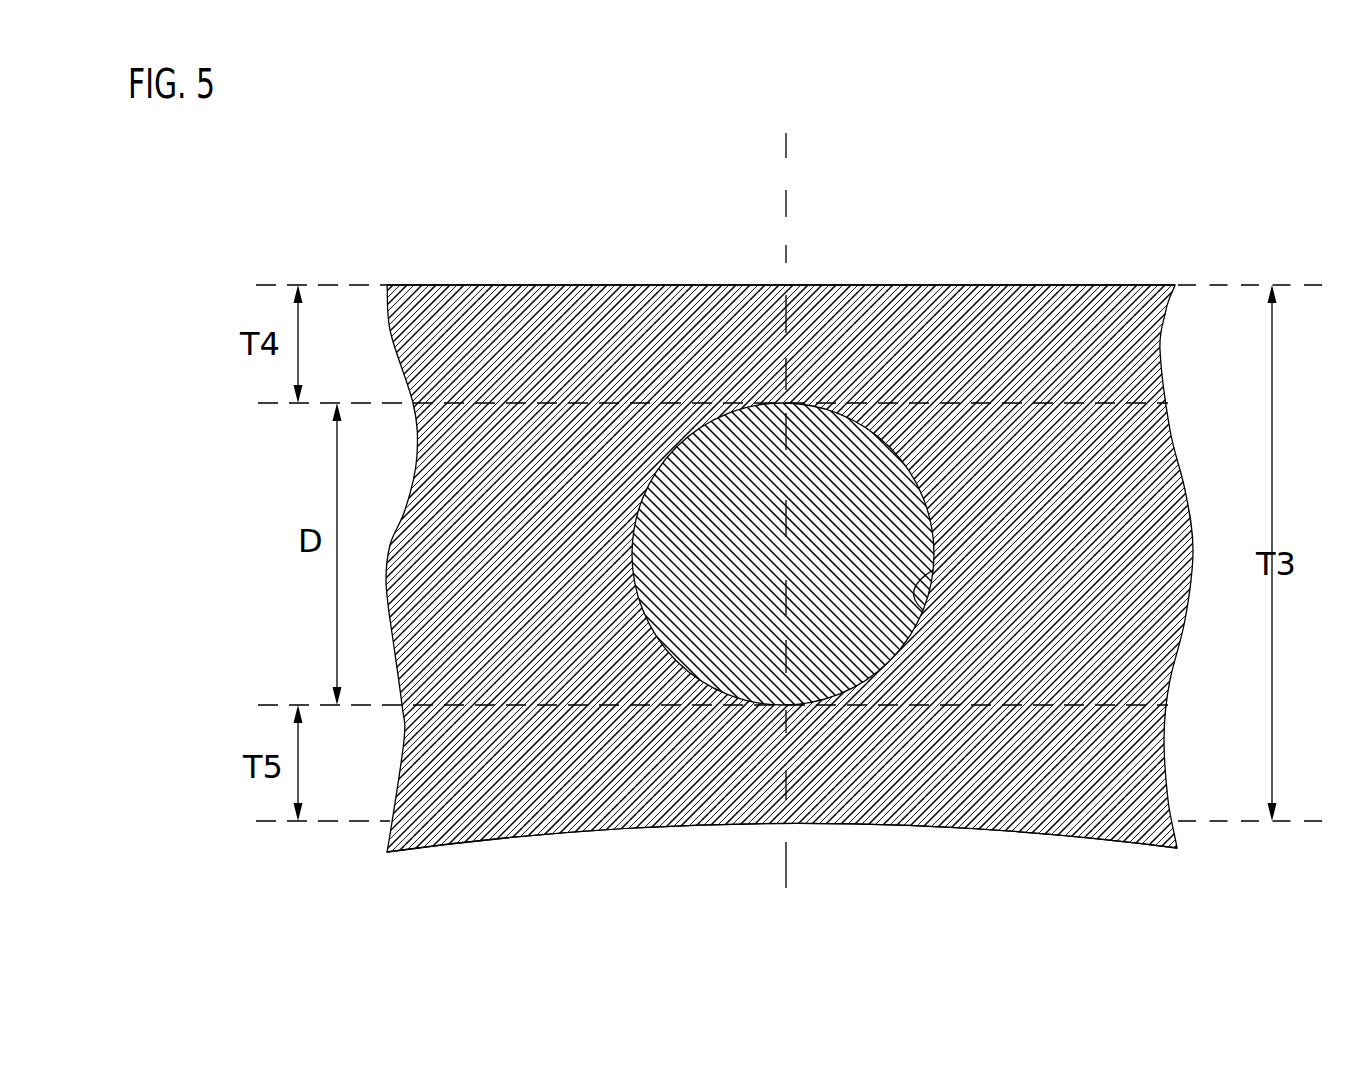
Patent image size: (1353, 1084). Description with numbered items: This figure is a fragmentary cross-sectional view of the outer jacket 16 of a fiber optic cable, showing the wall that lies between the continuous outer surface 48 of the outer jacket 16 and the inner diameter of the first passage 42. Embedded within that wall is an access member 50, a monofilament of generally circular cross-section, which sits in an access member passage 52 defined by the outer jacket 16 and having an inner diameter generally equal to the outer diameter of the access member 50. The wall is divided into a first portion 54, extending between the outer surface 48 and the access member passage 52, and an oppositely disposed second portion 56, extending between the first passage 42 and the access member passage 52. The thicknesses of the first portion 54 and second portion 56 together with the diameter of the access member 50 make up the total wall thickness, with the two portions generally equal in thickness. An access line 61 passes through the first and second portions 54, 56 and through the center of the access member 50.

The outer jacket 16 is at (1020, 263).
The first passage 42 is at (807, 823).
The outer surface 48 is at (820, 284).
The access member 50 is at (873, 542).
The access member passage 52 is at (922, 614).
The first portion 54 is at (770, 350).
The second portion 56 is at (817, 767).
The access line 61 is at (786, 200).